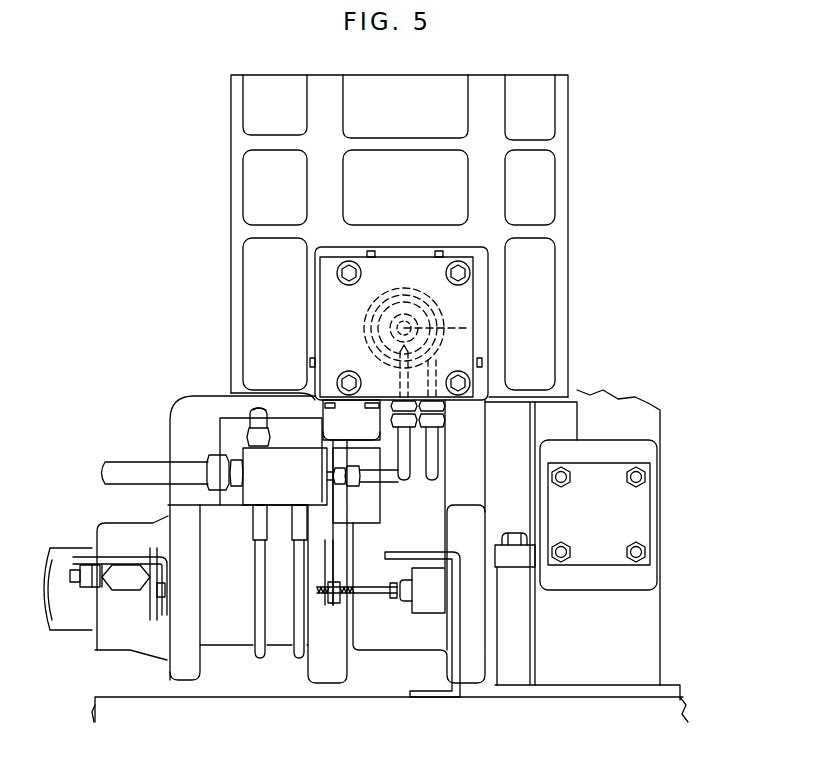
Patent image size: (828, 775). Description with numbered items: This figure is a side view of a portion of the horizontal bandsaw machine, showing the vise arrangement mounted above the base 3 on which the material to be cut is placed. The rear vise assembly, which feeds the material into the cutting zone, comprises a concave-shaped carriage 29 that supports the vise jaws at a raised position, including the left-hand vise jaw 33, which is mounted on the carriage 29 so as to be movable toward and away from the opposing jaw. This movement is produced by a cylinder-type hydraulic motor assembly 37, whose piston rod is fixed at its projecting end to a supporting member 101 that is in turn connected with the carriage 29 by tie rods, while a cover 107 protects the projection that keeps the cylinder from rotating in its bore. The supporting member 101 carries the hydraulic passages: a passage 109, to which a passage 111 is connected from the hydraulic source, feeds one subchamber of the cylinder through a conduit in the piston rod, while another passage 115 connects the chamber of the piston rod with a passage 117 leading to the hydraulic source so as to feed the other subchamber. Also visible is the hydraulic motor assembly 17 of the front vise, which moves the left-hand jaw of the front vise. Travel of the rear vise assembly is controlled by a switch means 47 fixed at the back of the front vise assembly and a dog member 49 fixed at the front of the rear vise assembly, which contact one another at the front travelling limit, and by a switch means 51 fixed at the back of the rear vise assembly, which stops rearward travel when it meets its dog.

The base 3 is at (122, 705).
The hydraulic motor assembly 17 is at (607, 490).
The carriage 29 is at (197, 402).
The left-hand vise jaw 33 is at (562, 199).
The hydraulic motor assembly 37 is at (417, 244).
The switch means 47 is at (410, 600).
The dog member 49 is at (367, 593).
The switch means 51 is at (80, 567).
The supporting member 101 is at (333, 302).
The cover 107 is at (343, 250).
The passage 109 is at (420, 322).
The passage 111 is at (435, 459).
The passage 115 is at (393, 373).
The passage 117 is at (400, 468).